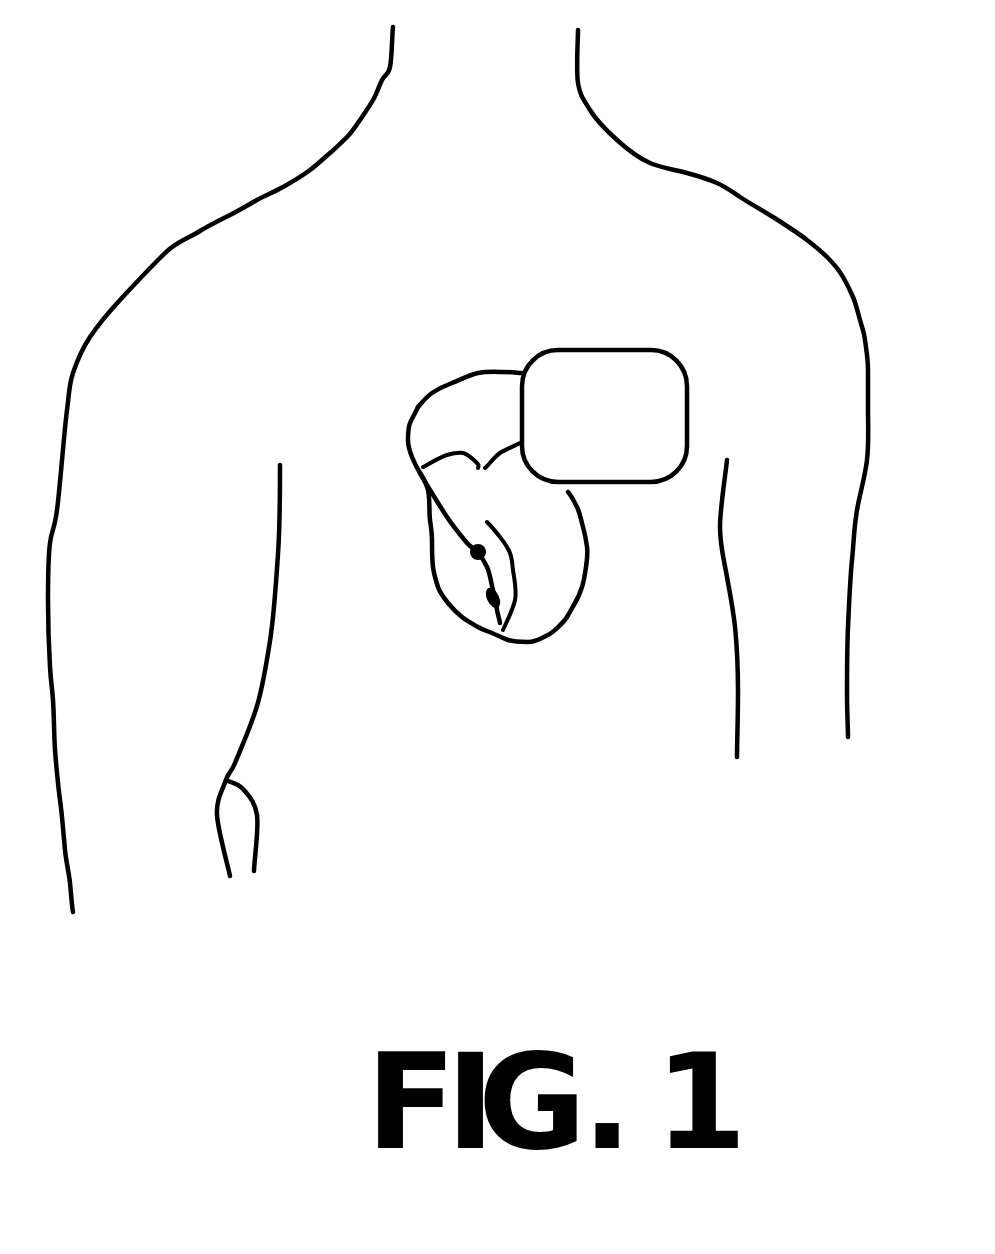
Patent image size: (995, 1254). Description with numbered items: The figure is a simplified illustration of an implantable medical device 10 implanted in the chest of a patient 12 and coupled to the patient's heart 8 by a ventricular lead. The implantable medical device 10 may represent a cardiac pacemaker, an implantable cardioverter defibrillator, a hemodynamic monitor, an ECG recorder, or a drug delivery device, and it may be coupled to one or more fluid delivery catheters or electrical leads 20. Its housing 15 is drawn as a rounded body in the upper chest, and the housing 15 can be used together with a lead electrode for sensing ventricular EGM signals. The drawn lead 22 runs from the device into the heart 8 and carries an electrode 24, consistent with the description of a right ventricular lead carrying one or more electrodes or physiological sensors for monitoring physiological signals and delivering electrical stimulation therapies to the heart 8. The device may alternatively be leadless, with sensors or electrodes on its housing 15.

The implantable medical device 10 is at (633, 380).
The patient 12 is at (717, 183).
The IMD housing 15 is at (687, 420).
The electrical lead 20 is at (420, 400).
The lead 22 is at (470, 622).
The electrode 24 is at (470, 551).
The heart 8 is at (563, 623).